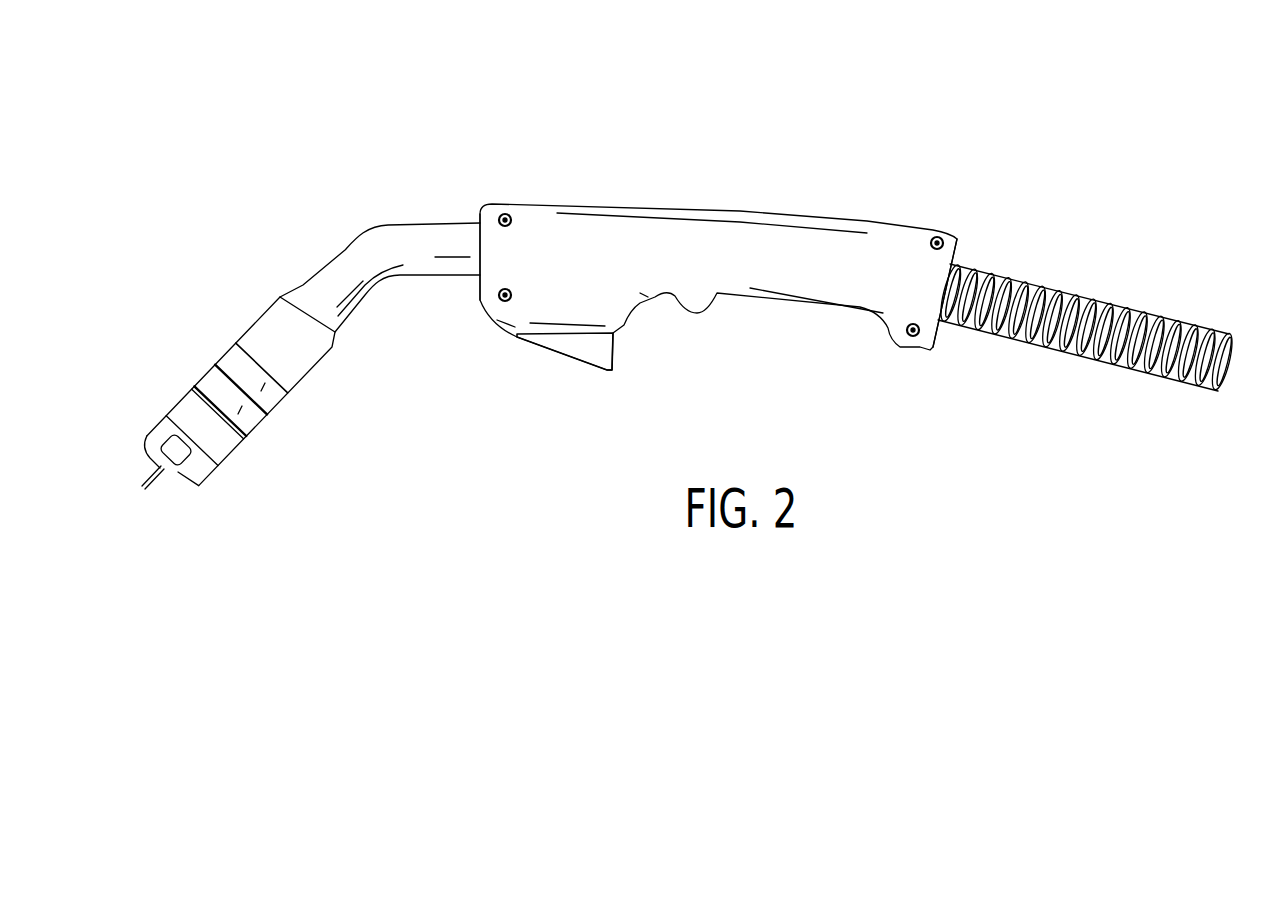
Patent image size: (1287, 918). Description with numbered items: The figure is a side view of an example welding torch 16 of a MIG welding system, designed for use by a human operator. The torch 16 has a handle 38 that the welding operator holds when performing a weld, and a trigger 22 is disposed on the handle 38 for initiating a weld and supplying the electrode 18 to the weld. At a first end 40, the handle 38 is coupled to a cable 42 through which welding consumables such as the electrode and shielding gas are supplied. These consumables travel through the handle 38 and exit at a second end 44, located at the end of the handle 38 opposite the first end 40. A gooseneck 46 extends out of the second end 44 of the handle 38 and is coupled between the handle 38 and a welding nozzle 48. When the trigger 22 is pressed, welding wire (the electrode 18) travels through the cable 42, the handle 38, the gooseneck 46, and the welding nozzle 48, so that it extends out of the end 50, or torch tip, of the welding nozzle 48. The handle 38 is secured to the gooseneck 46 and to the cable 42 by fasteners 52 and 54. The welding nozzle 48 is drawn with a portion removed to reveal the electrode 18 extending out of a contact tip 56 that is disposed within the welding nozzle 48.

The welding torch 16 is at (565, 65).
The electrode 18 is at (150, 484).
The trigger 22 is at (570, 342).
The handle 38 is at (730, 243).
The first end 40 is at (957, 247).
The cable 42 is at (1113, 360).
The second end 44 is at (480, 222).
The gooseneck 46 is at (303, 285).
The welding nozzle 48 is at (204, 378).
The end 50 is at (155, 466).
The fasteners 52 is at (511, 215).
The fasteners 54 is at (502, 302).
The contact tip 56 is at (192, 477).